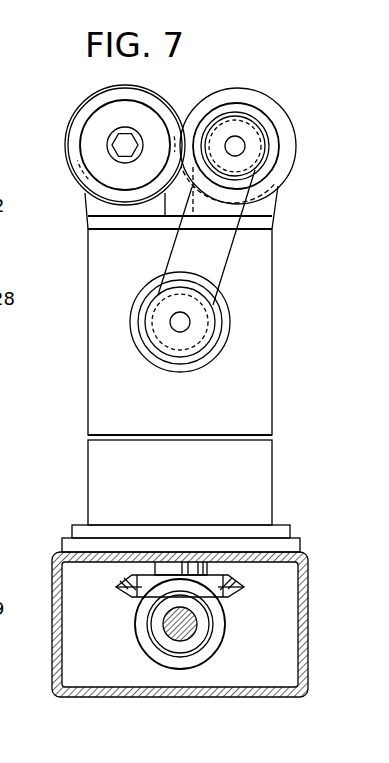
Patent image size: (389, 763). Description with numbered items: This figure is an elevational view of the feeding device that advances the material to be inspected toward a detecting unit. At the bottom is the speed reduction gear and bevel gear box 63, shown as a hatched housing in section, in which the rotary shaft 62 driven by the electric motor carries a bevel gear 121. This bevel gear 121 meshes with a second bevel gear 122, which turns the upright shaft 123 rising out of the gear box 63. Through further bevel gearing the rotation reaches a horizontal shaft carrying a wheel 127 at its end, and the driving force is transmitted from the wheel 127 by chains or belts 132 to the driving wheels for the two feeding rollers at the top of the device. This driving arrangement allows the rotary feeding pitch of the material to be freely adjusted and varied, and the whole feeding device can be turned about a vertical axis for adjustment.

The chains or belts 132 is at (175, 246).
The wheel 127 is at (150, 323).
The upright shaft 123 is at (179, 567).
The bevel gear 122 is at (137, 595).
The bevel gear 121 is at (215, 640).
The rotary shaft 62 is at (174, 630).
The speed reduction gear and bevel gear box 63 is at (173, 680).